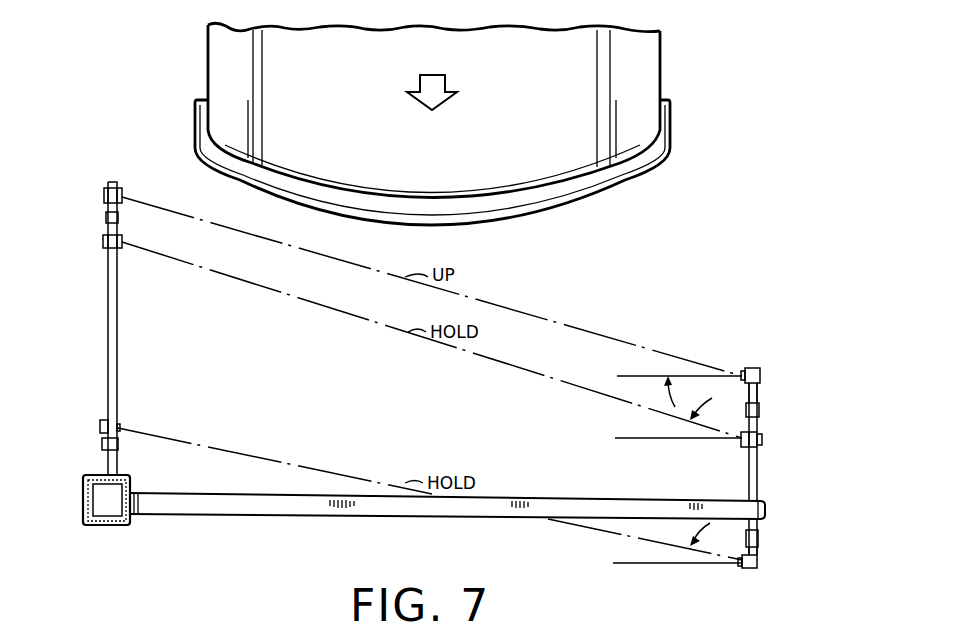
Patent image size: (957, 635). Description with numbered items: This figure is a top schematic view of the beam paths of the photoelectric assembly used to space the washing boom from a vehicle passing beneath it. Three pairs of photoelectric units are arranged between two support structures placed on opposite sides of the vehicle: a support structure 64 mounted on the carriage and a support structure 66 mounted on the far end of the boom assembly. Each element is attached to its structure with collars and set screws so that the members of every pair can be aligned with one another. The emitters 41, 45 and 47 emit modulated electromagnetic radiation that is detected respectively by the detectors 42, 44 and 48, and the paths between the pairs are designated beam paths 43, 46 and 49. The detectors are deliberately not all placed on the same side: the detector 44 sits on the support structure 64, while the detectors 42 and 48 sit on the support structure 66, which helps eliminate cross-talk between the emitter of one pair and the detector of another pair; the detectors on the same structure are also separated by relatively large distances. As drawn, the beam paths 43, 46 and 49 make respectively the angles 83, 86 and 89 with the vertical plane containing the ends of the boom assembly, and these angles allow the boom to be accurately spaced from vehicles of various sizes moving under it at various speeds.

The emitter 41 is at (122, 194).
The detector 44 is at (122, 240).
The emitter 47 is at (119, 427).
The support structure 64 is at (108, 333).
The beam path 43 is at (315, 249).
The beam path 46 is at (312, 301).
The beam path 49 is at (317, 464).
The detector 42 is at (761, 371).
The emitter 45 is at (762, 437).
The detector 48 is at (758, 558).
The support structure 66 is at (757, 463).
The angle 83 is at (672, 347).
The angle 86 is at (689, 442).
The angle 89 is at (690, 566).